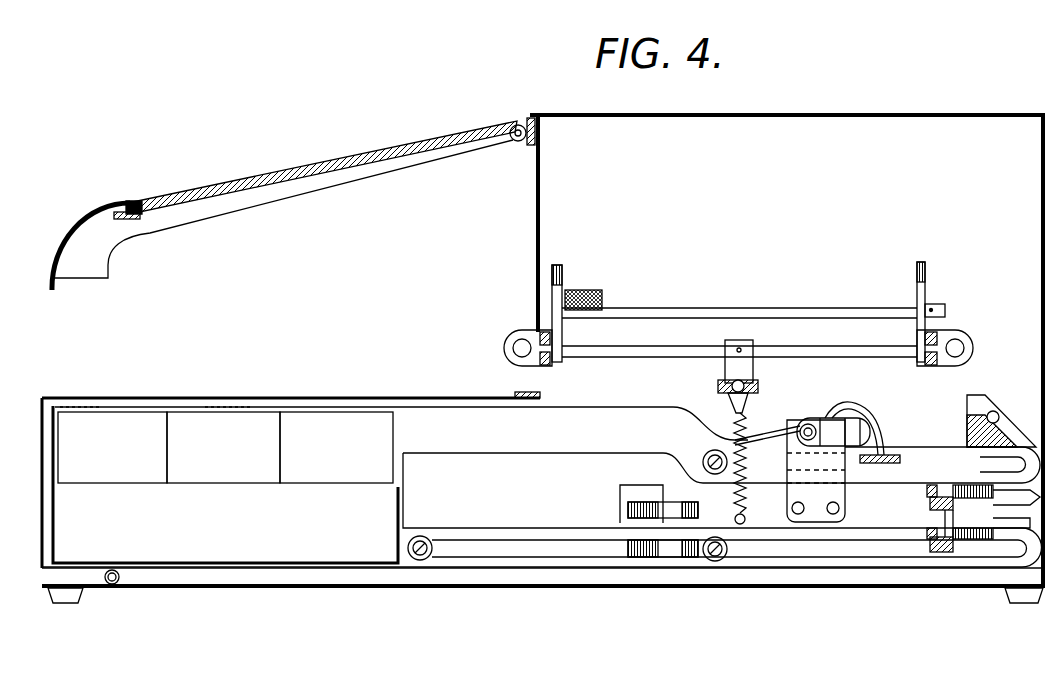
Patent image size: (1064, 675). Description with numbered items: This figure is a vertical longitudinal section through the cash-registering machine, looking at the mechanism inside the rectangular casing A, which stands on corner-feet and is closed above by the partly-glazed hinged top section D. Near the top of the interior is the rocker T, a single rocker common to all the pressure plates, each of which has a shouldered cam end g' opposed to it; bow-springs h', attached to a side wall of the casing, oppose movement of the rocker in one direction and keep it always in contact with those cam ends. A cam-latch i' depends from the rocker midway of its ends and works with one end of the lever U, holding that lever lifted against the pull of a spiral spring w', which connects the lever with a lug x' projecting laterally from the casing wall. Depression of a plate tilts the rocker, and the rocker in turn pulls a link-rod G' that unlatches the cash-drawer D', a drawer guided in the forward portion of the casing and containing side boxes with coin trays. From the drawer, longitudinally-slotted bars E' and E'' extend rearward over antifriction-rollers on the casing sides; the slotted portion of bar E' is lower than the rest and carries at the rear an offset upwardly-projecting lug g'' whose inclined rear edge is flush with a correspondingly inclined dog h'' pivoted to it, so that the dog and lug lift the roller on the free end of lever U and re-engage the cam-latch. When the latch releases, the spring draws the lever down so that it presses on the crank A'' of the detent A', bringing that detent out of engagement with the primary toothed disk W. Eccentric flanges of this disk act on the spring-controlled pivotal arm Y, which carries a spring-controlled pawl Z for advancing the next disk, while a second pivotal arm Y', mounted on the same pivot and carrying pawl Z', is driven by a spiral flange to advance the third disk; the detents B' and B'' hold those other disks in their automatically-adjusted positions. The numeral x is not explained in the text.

The casing A is at (542, 330).
The hinged top section D is at (289, 205).
The partition x is at (516, 223).
The bow-springs h' is at (755, 292).
The shouldered cam end g' is at (613, 294).
The rocker T is at (846, 298).
The link-rod G' is at (950, 290).
The lever U is at (720, 387).
The cam-latch i' is at (762, 364).
The spiral spring w' is at (769, 450).
The lug x' is at (754, 520).
The crank A'' is at (809, 413).
The detent A' is at (850, 458).
The slotted bar E' is at (395, 420).
The slotted bar E'' is at (542, 507).
The cash-drawer D' is at (542, 500).
The detent B' is at (645, 500).
The detent B'' is at (663, 589).
The lug g'' is at (1001, 390).
The dog h'' is at (1014, 393).
The pivotal arm Y is at (983, 456).
The pivotal arm Y' is at (978, 576).
The disk W is at (949, 523).
The pawl Z is at (910, 508).
The pawl Z' is at (928, 595).